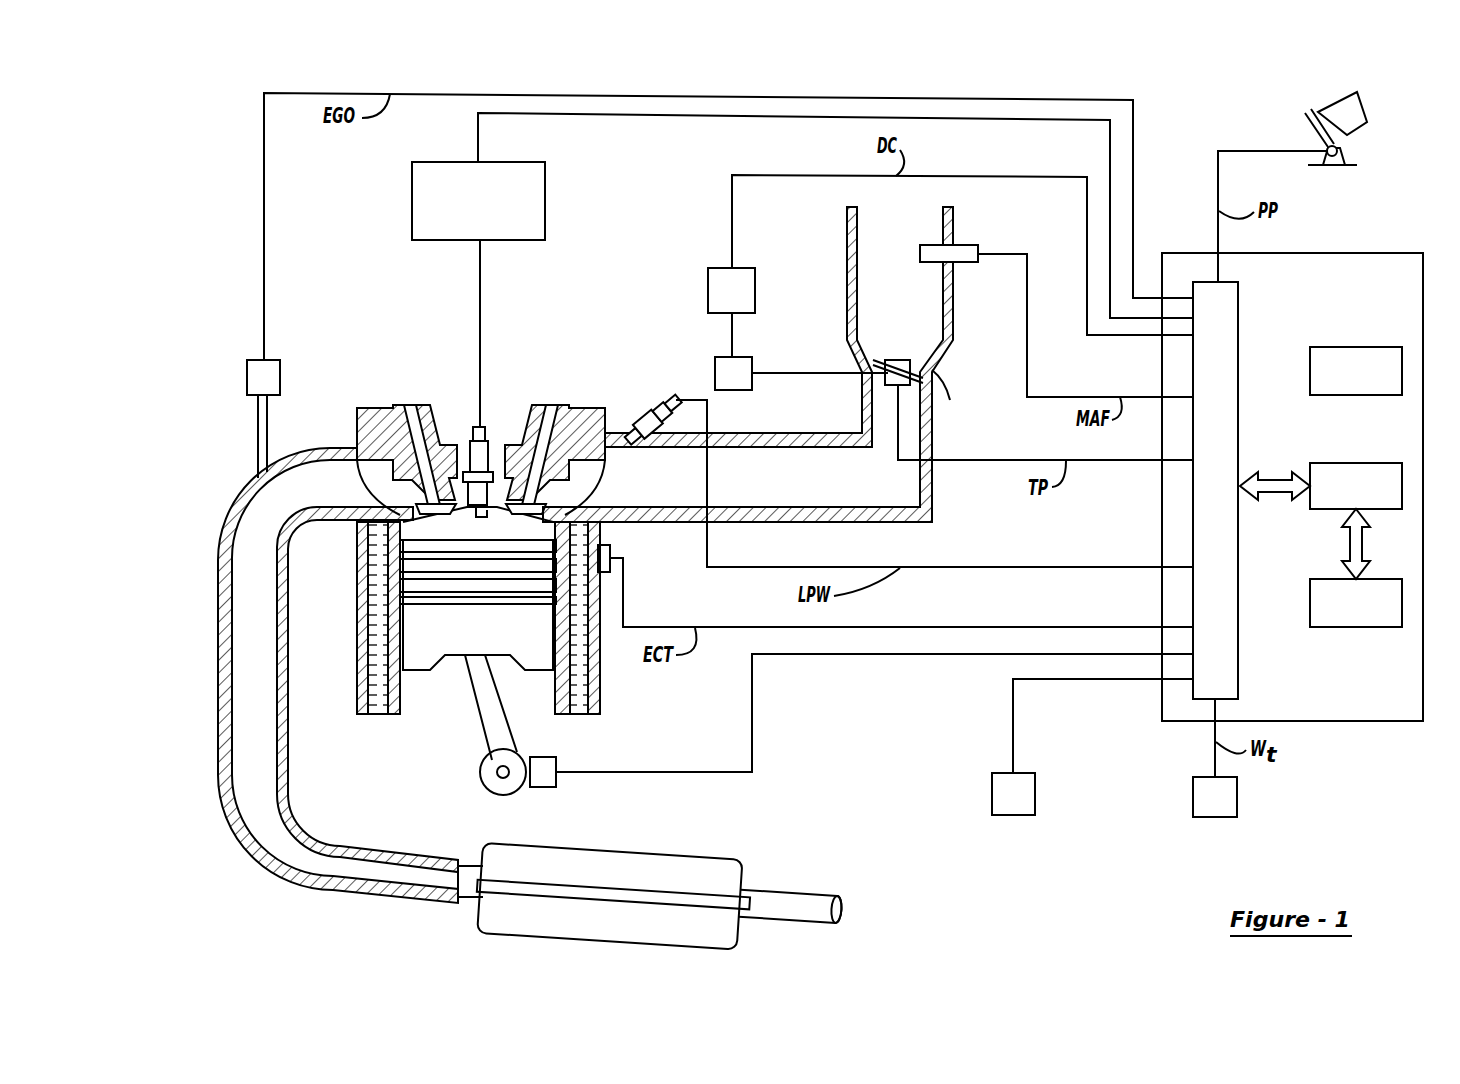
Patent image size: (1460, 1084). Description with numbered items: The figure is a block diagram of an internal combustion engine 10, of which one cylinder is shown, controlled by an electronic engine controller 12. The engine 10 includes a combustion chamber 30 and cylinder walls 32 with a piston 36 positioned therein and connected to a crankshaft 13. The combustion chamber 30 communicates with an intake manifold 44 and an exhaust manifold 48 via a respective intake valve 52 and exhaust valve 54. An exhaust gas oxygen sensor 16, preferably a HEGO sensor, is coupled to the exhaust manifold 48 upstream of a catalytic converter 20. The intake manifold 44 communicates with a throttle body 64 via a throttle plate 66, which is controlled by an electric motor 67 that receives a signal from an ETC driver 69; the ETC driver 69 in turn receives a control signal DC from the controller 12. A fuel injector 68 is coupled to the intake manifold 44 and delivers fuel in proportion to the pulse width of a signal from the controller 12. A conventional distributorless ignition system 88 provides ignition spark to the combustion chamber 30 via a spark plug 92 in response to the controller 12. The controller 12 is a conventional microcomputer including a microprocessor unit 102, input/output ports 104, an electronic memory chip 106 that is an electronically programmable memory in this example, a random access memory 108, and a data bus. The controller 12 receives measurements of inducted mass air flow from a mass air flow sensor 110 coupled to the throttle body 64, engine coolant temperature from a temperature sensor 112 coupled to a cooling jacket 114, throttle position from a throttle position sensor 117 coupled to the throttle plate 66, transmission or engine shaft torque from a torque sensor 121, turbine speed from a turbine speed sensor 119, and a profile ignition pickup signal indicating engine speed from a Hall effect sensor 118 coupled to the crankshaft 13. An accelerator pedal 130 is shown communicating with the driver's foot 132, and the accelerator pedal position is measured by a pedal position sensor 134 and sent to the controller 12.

The internal combustion engine 10 is at (395, 800).
The electronic engine controller 12 is at (1400, 722).
The crankshaft 13 is at (500, 782).
The exhaust gas oxygen sensor 16 is at (250, 376).
The catalytic converter 20 is at (652, 860).
The combustion chamber 30 is at (460, 556).
The cylinder walls 32 is at (396, 716).
The piston 36 is at (470, 690).
The intake manifold 44 is at (834, 500).
The exhaust manifold 48 is at (242, 500).
The intake valve 52 is at (545, 496).
The exhaust valve 54 is at (426, 496).
The throttle body 64 is at (876, 276).
The throttle plate 66 is at (898, 362).
The electric motor 67 is at (716, 376).
The fuel injector 68 is at (640, 420).
The ETC driver 69 is at (708, 290).
The distributorless ignition system 88 is at (545, 209).
The spark plug 92 is at (481, 440).
The microprocessor unit 102 is at (1320, 463).
The input/output ports 104 is at (1239, 320).
The electronic memory chip 106 is at (1340, 347).
The random access memory 108 is at (1340, 628).
The mass air flow sensor 110 is at (920, 254).
The temperature sensor 112 is at (612, 558).
The cooling jacket 114 is at (600, 700).
The throttle position sensor 117 is at (934, 372).
The Hall effect sensor 118 is at (540, 788).
The turbine speed sensor 119 is at (1238, 800).
The torque sensor 121 is at (1036, 796).
The accelerator pedal 130 is at (1302, 116).
The driver's foot 132 is at (1370, 116).
The pedal position sensor 134 is at (1352, 160).